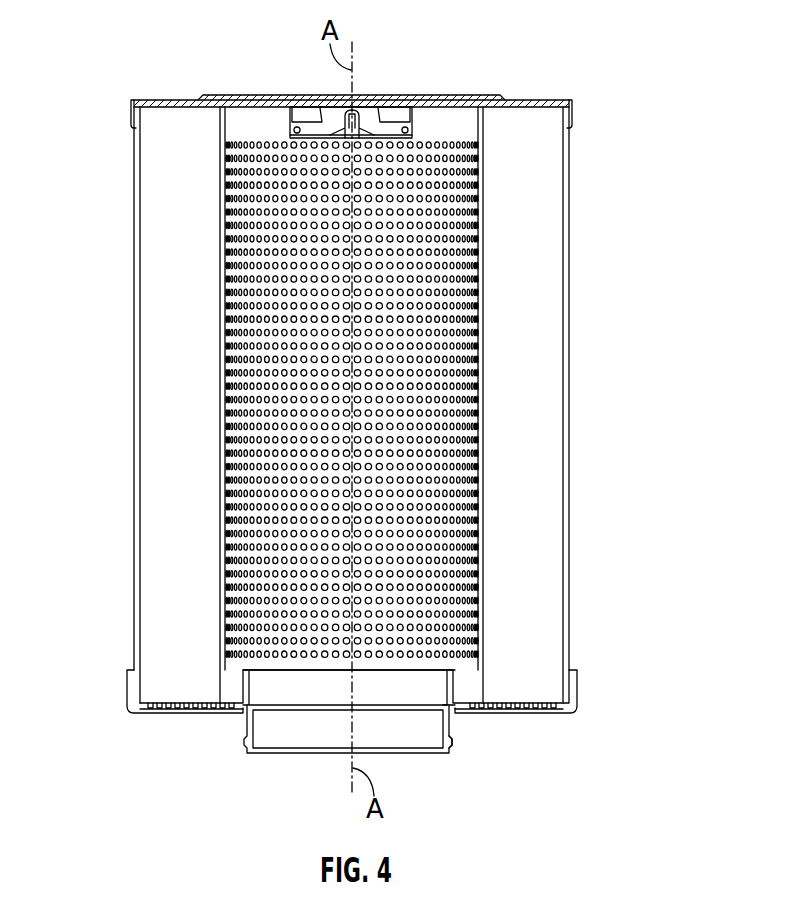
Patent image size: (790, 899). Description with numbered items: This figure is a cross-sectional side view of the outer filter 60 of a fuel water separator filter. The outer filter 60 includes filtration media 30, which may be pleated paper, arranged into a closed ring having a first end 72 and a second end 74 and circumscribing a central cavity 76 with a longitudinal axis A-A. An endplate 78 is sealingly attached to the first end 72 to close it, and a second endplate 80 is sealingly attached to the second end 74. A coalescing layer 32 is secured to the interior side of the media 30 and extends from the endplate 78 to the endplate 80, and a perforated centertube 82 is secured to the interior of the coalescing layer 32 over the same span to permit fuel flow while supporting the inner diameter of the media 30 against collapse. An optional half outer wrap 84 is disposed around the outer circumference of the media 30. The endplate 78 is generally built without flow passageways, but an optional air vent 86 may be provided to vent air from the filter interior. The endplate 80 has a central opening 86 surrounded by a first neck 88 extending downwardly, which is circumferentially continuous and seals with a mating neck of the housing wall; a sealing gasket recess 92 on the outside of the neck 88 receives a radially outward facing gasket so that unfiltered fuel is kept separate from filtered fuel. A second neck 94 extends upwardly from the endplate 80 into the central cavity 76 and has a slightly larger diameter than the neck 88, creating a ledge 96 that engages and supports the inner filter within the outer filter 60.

The outer filter 60 is at (600, 212).
The filtration media 30 is at (547, 375).
The coalescing layer 32 is at (485, 571).
The first end 72 is at (172, 122).
The second end 74 is at (545, 690).
The central cavity 76 is at (228, 552).
The endplate 78 is at (518, 100).
The second endplate 80 is at (535, 714).
The centertube 82 is at (444, 458).
The half outer wrap 84 is at (118, 259).
The air vent / central opening 86 is at (393, 114).
The first neck 88 is at (418, 723).
The sealing gasket recess 92 is at (450, 749).
The second neck 94 is at (246, 695).
The ledge 96 is at (450, 700).